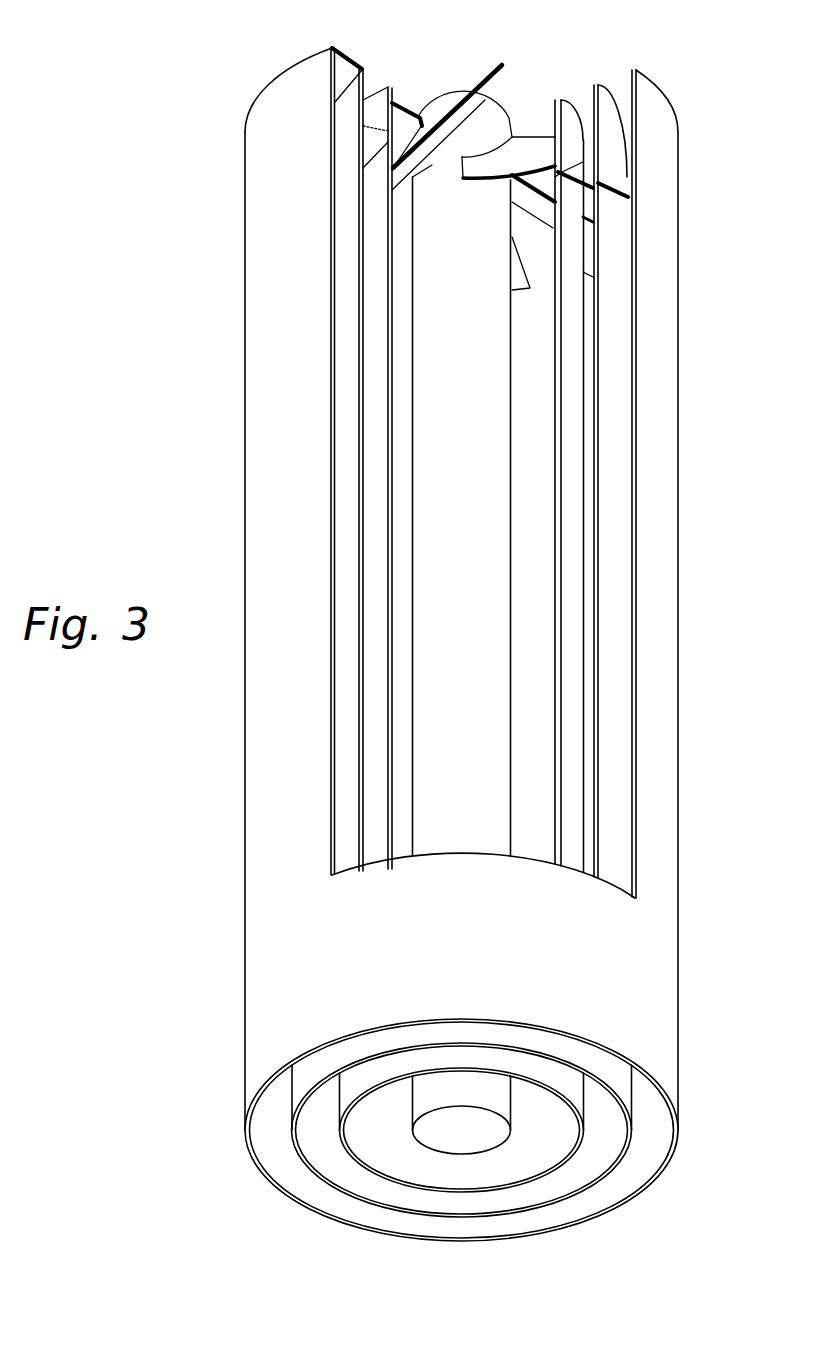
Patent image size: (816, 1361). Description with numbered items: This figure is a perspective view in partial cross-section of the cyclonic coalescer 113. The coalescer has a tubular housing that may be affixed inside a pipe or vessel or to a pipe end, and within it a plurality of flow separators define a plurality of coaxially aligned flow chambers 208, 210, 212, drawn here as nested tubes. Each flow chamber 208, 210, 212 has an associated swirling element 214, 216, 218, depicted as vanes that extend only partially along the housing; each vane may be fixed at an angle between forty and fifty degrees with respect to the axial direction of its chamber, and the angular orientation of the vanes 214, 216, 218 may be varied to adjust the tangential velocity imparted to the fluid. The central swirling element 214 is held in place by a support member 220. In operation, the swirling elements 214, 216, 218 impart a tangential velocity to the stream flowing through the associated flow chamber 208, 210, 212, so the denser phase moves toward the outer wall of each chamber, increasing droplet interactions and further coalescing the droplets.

The cyclonic coalescer 113 is at (197, 308).
The flow chamber 208 is at (267, 1107).
The flow chamber 210 is at (313, 1130).
The flow chamber 212 is at (370, 1147).
The central swirling element 214 is at (341, 53).
The swirling element 216 is at (370, 140).
The swirling element 218 is at (488, 75).
The support member 220 is at (457, 1143).